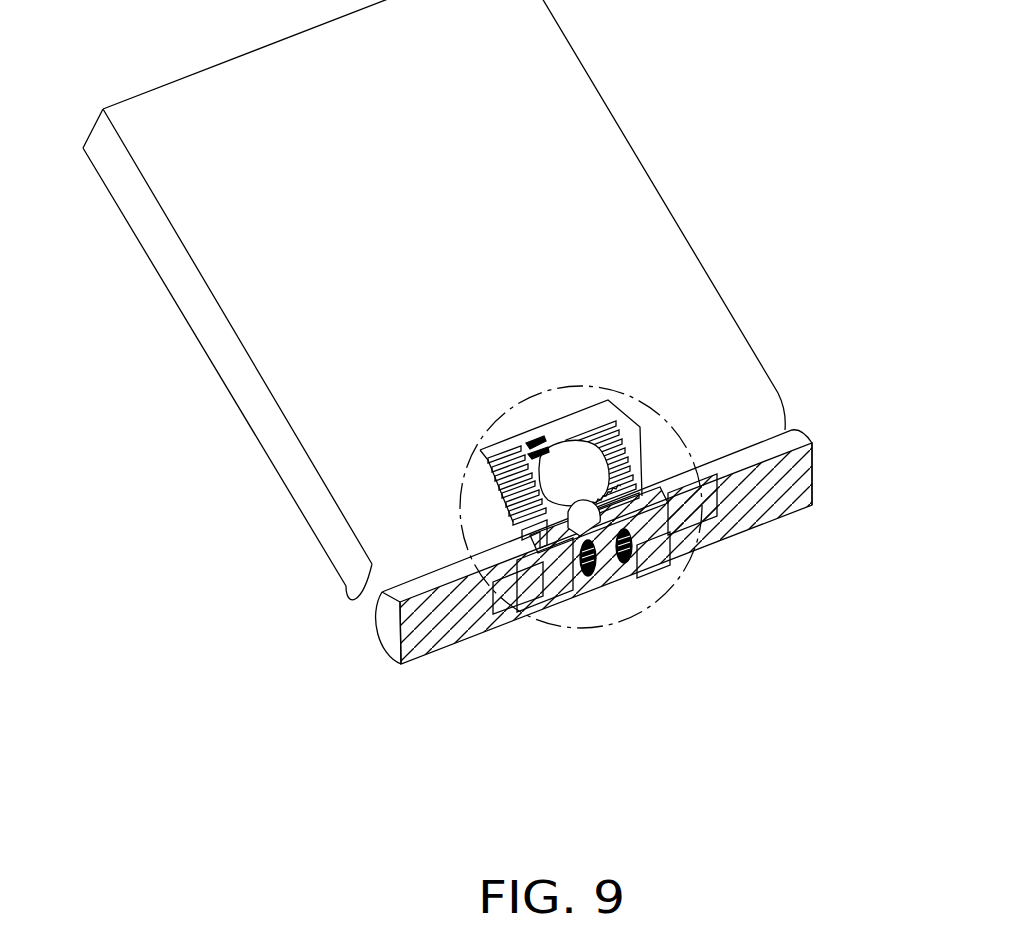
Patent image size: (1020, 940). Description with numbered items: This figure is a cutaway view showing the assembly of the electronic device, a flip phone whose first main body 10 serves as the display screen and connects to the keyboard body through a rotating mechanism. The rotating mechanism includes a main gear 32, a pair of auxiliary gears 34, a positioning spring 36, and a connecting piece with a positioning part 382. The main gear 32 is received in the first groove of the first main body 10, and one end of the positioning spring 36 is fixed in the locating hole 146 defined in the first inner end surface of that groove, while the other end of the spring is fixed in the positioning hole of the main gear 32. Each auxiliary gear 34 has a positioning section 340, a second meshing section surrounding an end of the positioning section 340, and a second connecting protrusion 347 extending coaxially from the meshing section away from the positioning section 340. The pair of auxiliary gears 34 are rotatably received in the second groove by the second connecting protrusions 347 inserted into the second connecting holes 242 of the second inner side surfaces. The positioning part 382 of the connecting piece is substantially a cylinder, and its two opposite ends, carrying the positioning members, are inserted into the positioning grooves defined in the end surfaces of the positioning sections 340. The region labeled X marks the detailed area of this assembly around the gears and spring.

The first main body 10 is at (605, 158).
The locating hole 146 is at (537, 448).
The positioning spring 36 is at (580, 475).
The main gear 32 is at (640, 413).
The enlarged region X is at (693, 432).
The second connecting protrusion 347 is at (694, 520).
The positioning part 382 is at (610, 570).
The positioning section 340 is at (580, 577).
The auxiliary gear 34 is at (558, 597).
The second connecting hole 242 is at (492, 608).